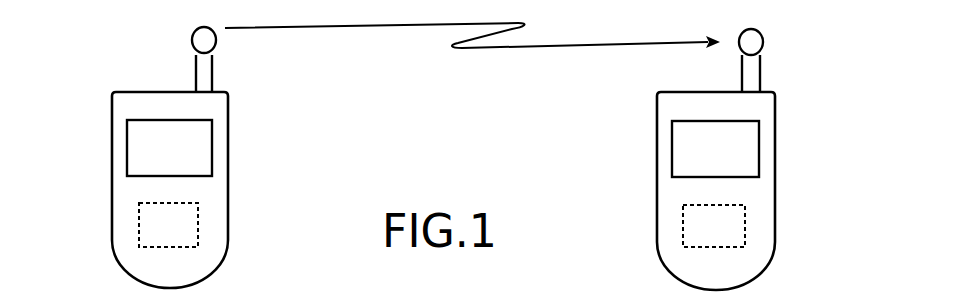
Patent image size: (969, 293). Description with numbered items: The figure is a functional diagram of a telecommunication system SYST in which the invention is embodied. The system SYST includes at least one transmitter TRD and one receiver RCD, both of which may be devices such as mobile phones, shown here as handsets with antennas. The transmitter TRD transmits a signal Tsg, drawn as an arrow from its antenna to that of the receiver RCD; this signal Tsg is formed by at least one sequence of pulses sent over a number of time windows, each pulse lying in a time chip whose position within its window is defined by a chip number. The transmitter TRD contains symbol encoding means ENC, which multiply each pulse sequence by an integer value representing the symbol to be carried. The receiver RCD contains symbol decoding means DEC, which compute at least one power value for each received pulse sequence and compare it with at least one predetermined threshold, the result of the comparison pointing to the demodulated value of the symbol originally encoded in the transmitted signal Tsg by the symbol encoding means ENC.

The telecommunication system SYST is at (147, 43).
The transmitter TRD is at (112, 133).
The receiver RCD is at (775, 135).
The symbol encoding means ENC is at (168, 225).
The symbol decoding means DEC is at (714, 226).
The signal Tsg is at (472, 59).